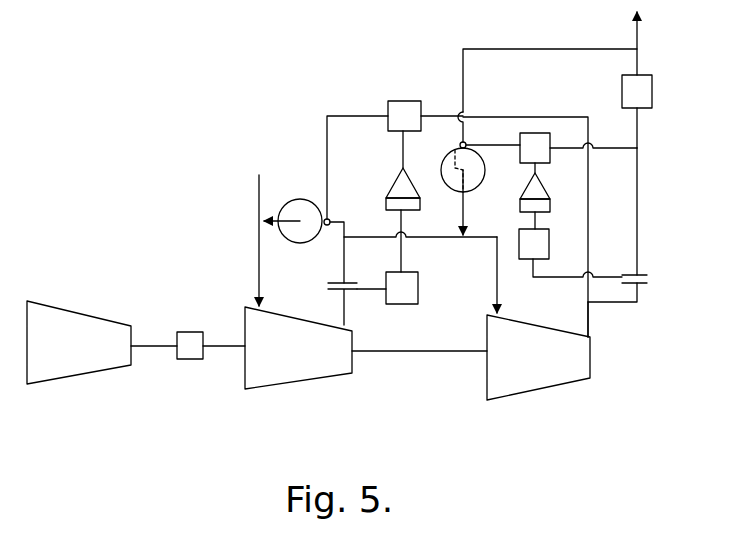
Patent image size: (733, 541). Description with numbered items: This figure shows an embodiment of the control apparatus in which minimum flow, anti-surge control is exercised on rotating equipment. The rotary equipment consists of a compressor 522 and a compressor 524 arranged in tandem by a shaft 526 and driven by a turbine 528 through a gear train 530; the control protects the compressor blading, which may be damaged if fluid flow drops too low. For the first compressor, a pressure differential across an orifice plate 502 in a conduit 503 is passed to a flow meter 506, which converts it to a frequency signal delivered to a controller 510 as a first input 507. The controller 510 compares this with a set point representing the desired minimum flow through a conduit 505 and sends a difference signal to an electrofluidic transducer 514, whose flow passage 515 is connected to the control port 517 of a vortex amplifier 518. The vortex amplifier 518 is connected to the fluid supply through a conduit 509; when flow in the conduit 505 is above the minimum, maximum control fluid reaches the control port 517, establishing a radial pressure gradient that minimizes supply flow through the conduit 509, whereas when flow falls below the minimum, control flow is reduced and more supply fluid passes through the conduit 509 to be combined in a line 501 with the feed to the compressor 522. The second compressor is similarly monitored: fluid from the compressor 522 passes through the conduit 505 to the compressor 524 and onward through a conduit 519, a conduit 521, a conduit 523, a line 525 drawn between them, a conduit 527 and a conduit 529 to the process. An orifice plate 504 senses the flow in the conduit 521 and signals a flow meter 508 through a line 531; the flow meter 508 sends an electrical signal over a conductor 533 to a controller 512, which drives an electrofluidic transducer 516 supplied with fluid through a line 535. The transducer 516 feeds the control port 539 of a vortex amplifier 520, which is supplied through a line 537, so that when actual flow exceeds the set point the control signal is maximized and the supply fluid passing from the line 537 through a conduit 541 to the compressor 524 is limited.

The line 501 is at (258, 272).
The orifice plate 502 is at (327, 287).
The conduit 503 is at (371, 291).
The orifice plate 504 is at (648, 278).
The conduit 505 is at (370, 238).
The flow meter 506 is at (419, 296).
The first input 507 is at (403, 257).
The flow meter 508 is at (532, 262).
The conduit 509 is at (342, 230).
The controller 510 is at (396, 183).
The controller 512 is at (540, 187).
The electrofluidic transducer 514 is at (402, 101).
The flow passage 515 is at (349, 115).
The electrofluidic transducer 516 is at (519, 138).
The control port 517 is at (331, 219).
The vortex amplifier 518 is at (298, 200).
The conduit 519 is at (589, 320).
The vortex amplifier 520 is at (441, 202).
The conduit 521 is at (642, 302).
The compressor 522 is at (293, 382).
The conduit 523 is at (640, 202).
The compressor 524 is at (532, 380).
The connection line 525 is at (640, 137).
The shaft 526 is at (392, 352).
The conduit 527 is at (640, 63).
The turbine 528 is at (72, 378).
The conduit 529 is at (642, 33).
The gear train 530 is at (190, 360).
The line 531 is at (606, 275).
The conductor 533 is at (530, 219).
The line 535 is at (606, 147).
The line 537 is at (557, 49).
The control port 539 is at (458, 137).
The conduit 541 is at (496, 285).